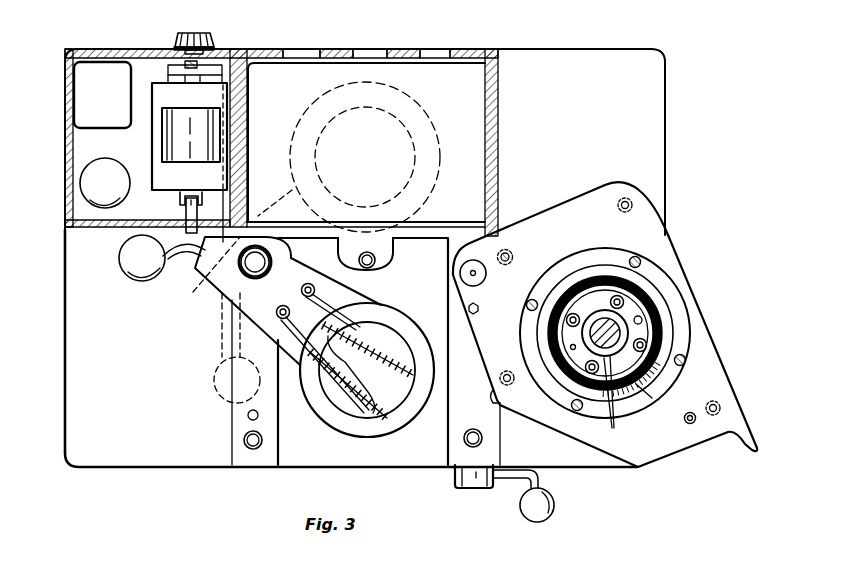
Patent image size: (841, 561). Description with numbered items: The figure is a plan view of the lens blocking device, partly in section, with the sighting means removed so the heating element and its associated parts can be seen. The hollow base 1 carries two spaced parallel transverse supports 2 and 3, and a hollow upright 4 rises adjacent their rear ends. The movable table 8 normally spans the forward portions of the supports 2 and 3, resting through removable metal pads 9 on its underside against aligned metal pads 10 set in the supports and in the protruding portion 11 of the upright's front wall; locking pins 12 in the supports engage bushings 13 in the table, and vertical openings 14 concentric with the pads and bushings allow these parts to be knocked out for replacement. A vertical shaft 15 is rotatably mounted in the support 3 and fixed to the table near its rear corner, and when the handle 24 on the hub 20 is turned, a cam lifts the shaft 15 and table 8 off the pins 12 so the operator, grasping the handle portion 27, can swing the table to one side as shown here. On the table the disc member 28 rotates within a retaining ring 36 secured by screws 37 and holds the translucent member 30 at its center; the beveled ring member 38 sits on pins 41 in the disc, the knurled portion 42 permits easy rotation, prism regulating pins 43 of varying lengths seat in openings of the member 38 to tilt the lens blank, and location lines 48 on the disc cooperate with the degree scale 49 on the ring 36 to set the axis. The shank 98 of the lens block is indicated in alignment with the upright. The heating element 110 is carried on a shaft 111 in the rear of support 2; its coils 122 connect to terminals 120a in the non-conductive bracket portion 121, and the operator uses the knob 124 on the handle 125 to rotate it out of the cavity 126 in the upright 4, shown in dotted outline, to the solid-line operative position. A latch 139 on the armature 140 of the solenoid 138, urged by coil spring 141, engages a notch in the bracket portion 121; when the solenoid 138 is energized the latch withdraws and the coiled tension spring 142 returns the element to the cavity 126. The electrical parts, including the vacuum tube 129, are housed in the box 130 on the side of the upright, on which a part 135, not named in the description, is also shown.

The hollow base 1 is at (145, 457).
The transverse support 2 is at (228, 452).
The transverse support 3 is at (487, 440).
The hollow upright 4 is at (477, 57).
The movable table 8 is at (649, 462).
The removable metal pads 9 is at (634, 204).
The removable metal pads 10 is at (263, 440).
The protruding portion 11 is at (388, 254).
The locking pins 12 is at (247, 415).
The bushings 13 is at (512, 252).
The vertical openings 14 is at (508, 262).
The vertical shaft 15 is at (458, 274).
The hub 20 is at (472, 490).
The handle 24 is at (522, 510).
The extension or handle portion 27 is at (748, 447).
The disc member 28 is at (660, 300).
The translucent member 30 is at (623, 332).
The retaining ring 36 is at (667, 273).
The screws 37 is at (525, 308).
The beveled ring member 38 is at (577, 364).
The pins 41 is at (571, 347).
The knurled portion 42 is at (662, 343).
The prism regulating pins 43 is at (614, 297).
The location lines 48 is at (613, 428).
The degree scale 49 is at (642, 390).
The shank 98 is at (412, 98).
The heating element 110 is at (341, 450).
The shaft 111 is at (253, 270).
The terminals 120a is at (301, 293).
The non-conductive bracket portion 121 is at (297, 266).
The coils 122 is at (393, 343).
The knob 124 is at (133, 280).
The handle 125 is at (184, 263).
The cavity or depression 126 is at (473, 120).
The dual purpose rectifier-amplifier thermionic vacuum tube 129 is at (100, 161).
The box 130 is at (66, 128).
The adjusting knob 135 is at (212, 35).
The solenoid 138 is at (162, 140).
The latch 139 is at (181, 212).
The armature 140 is at (172, 77).
The coil spring 141 is at (188, 62).
The coiled tension spring 142 is at (223, 292).